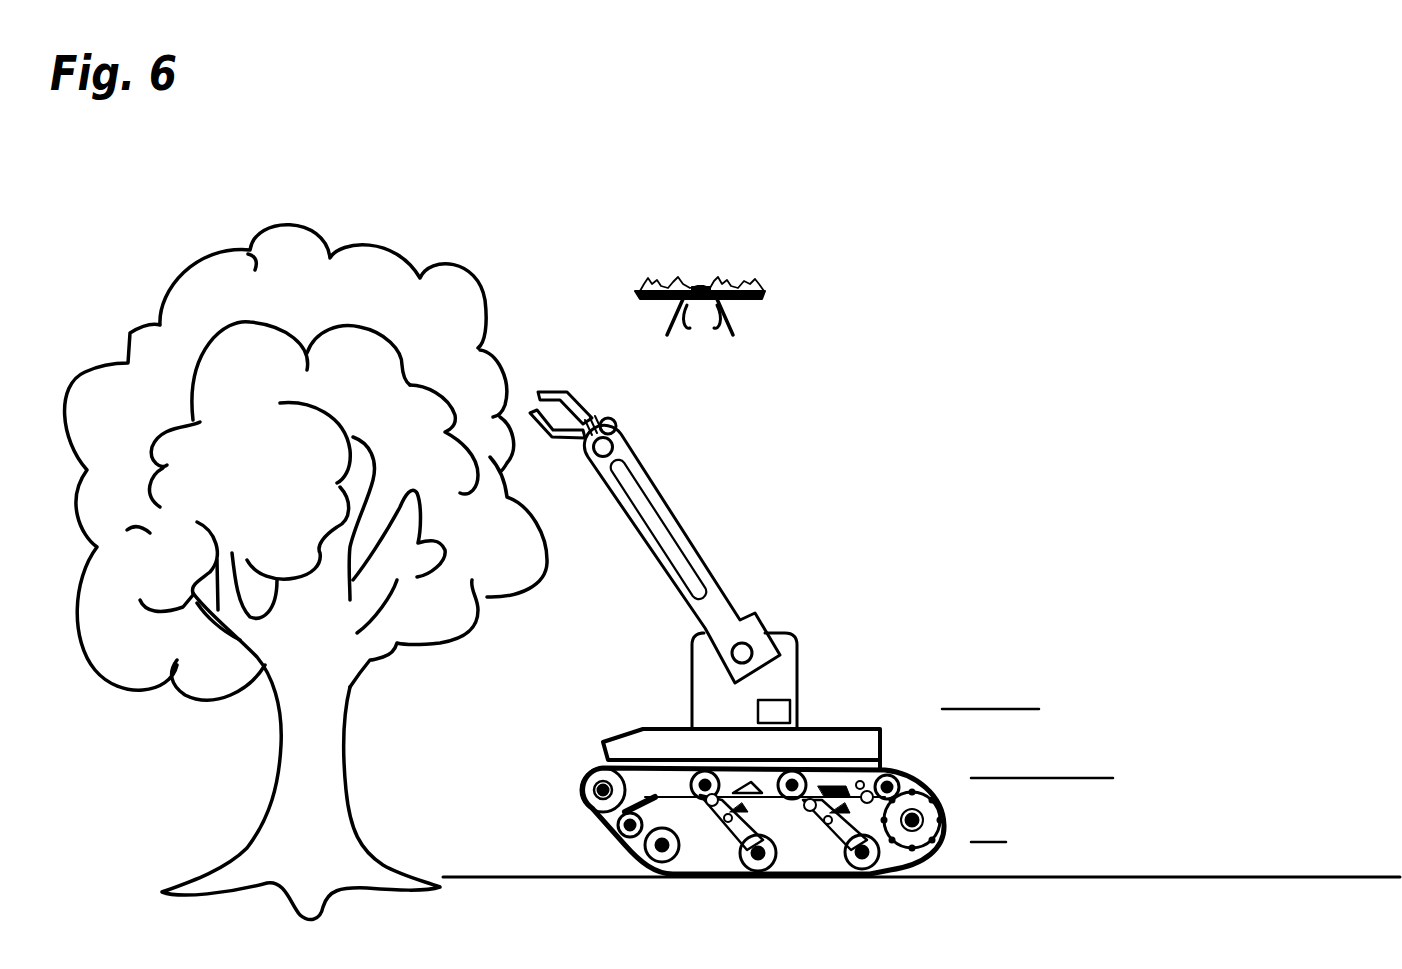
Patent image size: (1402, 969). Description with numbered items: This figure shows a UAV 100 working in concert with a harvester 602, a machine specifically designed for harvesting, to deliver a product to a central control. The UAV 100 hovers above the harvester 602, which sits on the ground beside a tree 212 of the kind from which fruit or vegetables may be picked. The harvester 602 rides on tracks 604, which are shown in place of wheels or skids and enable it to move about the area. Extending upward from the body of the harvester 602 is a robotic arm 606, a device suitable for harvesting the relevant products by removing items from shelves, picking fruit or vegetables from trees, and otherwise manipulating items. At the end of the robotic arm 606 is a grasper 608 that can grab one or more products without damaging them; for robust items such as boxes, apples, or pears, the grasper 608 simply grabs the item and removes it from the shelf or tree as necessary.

The tree 212 is at (303, 223).
The UAV 100 is at (675, 280).
The harvester 602 is at (726, 625).
The tracks 604 is at (570, 787).
The robotic arm 606 is at (682, 537).
The grasper 608 is at (580, 402).